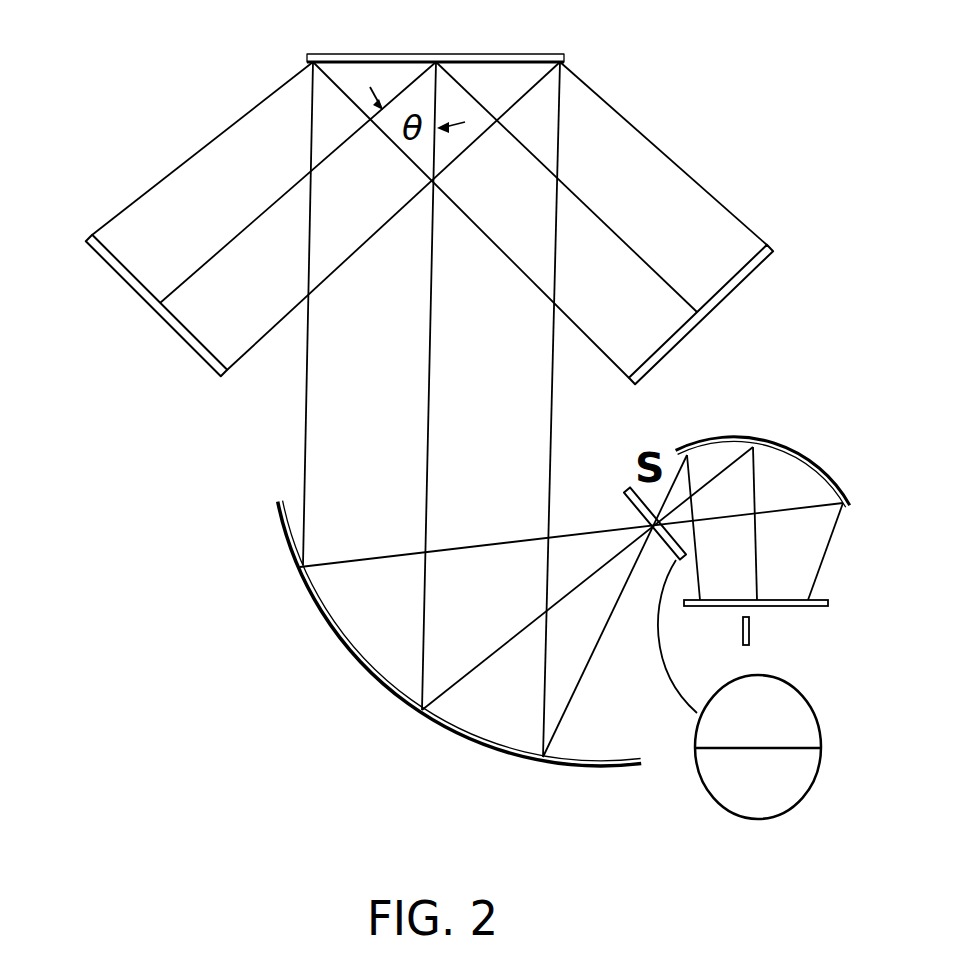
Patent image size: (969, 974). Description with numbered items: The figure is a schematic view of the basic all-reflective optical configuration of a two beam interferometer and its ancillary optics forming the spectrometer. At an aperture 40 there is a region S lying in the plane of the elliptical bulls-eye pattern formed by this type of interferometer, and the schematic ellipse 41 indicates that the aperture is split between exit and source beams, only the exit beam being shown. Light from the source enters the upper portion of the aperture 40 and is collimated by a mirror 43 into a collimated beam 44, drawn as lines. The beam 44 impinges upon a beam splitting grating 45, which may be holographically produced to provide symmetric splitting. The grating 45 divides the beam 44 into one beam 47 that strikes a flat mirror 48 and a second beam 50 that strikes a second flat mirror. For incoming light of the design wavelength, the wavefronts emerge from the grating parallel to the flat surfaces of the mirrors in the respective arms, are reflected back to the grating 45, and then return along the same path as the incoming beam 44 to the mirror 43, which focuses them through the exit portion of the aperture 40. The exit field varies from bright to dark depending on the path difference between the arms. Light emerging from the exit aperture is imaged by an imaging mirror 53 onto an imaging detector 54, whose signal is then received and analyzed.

The aperture 40 is at (623, 502).
The schematic ellipse 41 is at (795, 807).
The mirror 43 is at (462, 743).
The collimated beam 44 is at (302, 400).
The beam splitting grating 45 is at (502, 53).
The first beam 47 is at (213, 140).
The flat mirror 48 is at (140, 294).
The second beam 50 is at (673, 163).
The imaging mirror 53 is at (823, 468).
The imaging detector 54 is at (788, 607).